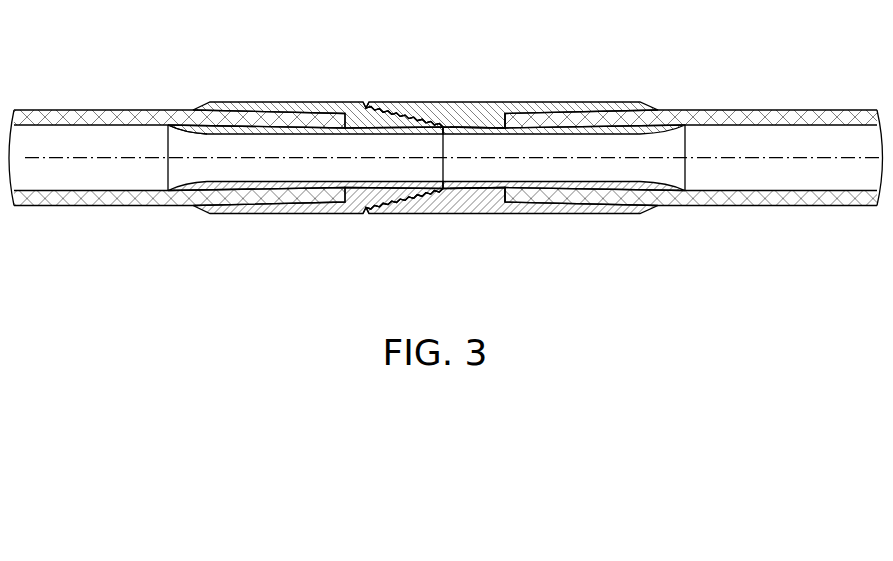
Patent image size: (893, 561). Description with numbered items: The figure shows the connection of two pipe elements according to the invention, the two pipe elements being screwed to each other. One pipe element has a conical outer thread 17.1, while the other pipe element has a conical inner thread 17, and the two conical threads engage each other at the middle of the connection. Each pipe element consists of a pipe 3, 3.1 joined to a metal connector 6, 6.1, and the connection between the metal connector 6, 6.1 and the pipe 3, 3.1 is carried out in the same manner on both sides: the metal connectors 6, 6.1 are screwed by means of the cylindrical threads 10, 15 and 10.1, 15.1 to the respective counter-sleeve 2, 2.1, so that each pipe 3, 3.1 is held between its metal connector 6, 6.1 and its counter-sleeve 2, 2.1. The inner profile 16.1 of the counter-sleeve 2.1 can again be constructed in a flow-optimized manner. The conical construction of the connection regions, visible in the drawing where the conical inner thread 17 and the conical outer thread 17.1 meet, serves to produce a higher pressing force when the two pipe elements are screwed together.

The counter-sleeve 2 is at (643, 130).
The counter-sleeve 2.1 is at (204, 190).
The pipe 3 is at (758, 118).
The pipe 3.1 is at (88, 118).
The metal connector 6 is at (473, 110).
The metal connector 6.1 is at (282, 107).
The cylindrical thread 10 is at (476, 189).
The cylindrical thread 10.1 is at (363, 207).
The cylindrical thread 15 is at (477, 121).
The cylindrical thread 15.1 is at (366, 105).
The inner profile 16.1 is at (207, 133).
The conical inner thread 17 is at (393, 112).
The conical outer thread 17.1 is at (404, 199).